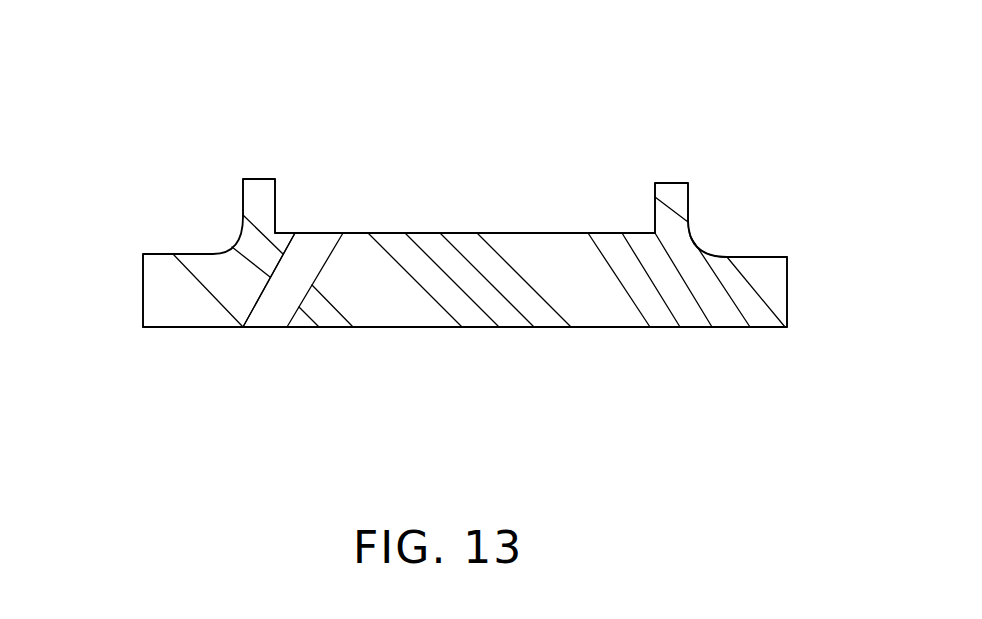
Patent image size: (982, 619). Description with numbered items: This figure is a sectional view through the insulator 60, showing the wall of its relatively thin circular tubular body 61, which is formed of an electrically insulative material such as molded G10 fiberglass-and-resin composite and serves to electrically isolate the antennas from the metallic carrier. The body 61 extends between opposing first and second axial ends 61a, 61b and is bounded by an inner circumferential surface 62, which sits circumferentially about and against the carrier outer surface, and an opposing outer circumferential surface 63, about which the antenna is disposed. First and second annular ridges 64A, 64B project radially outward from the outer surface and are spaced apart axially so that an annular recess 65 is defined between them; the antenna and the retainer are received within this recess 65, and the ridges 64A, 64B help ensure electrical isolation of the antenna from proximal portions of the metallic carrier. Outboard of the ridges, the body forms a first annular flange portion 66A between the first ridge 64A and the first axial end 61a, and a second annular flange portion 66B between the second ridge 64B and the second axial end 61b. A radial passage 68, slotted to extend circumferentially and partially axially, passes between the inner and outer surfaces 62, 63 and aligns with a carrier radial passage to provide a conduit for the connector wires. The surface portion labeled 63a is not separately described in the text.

The insulator 60 is at (537, 72).
The tubular body 61 is at (169, 246).
The first axial end 61a is at (788, 288).
The second axial end 61b is at (143, 288).
The inner circumferential surface 62 is at (583, 340).
The outer circumferential surface 63 is at (753, 247).
The top surface portion 63a is at (530, 233).
The first annular ridge 64A is at (672, 183).
The second annular ridge 64B is at (260, 185).
The annular recess 65 is at (432, 233).
The first annular flange portion 66A is at (752, 307).
The second annular flange portion 66B is at (173, 310).
The radial passage 68 is at (257, 296).